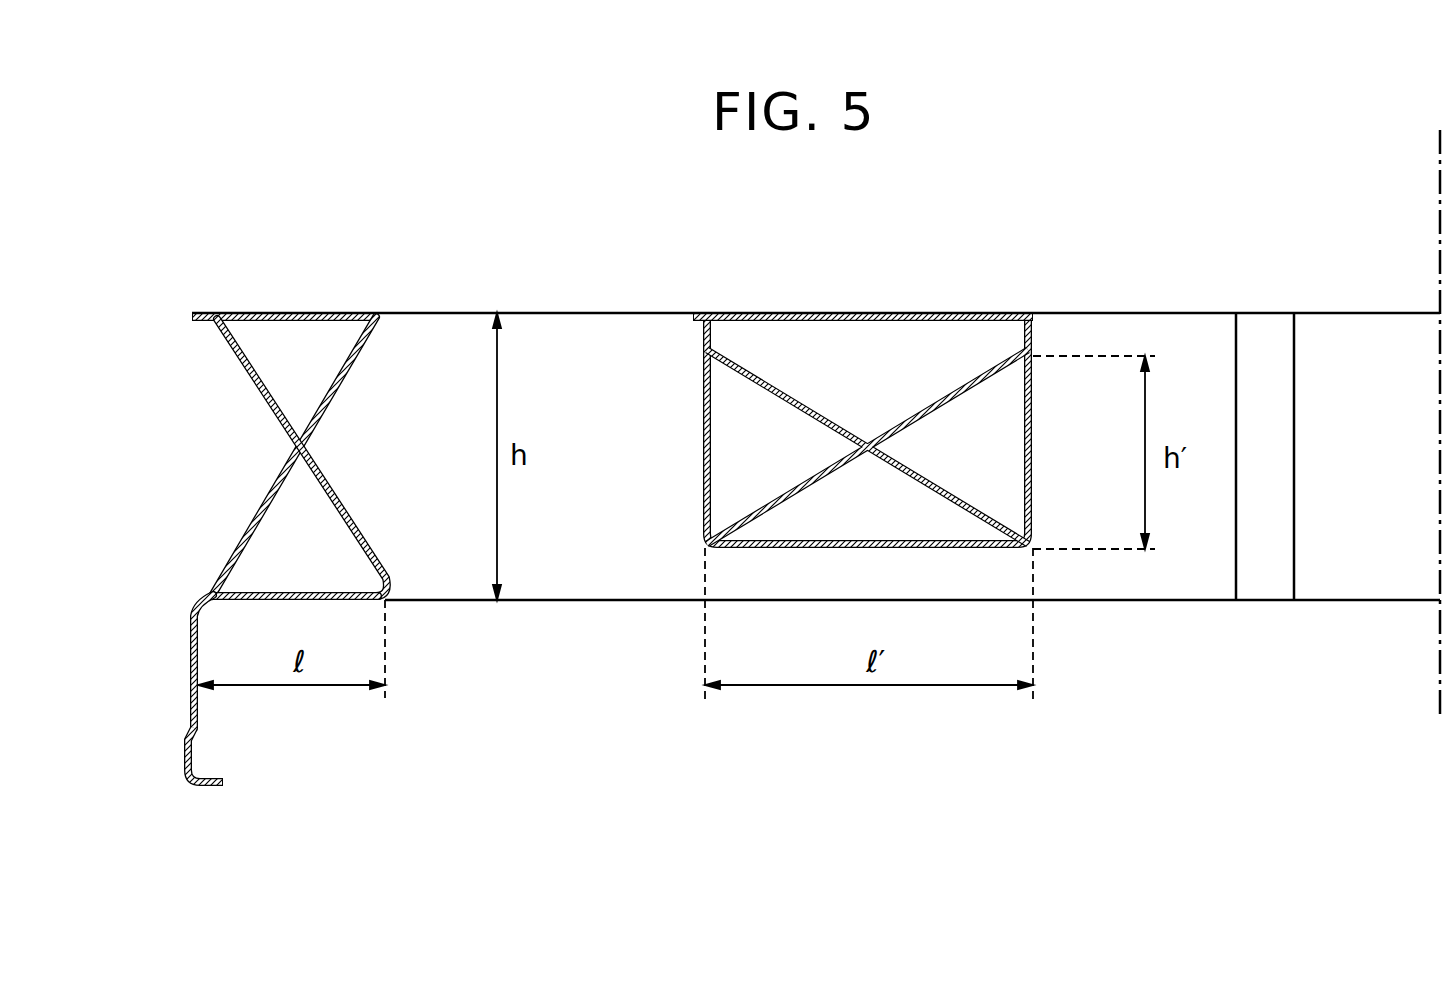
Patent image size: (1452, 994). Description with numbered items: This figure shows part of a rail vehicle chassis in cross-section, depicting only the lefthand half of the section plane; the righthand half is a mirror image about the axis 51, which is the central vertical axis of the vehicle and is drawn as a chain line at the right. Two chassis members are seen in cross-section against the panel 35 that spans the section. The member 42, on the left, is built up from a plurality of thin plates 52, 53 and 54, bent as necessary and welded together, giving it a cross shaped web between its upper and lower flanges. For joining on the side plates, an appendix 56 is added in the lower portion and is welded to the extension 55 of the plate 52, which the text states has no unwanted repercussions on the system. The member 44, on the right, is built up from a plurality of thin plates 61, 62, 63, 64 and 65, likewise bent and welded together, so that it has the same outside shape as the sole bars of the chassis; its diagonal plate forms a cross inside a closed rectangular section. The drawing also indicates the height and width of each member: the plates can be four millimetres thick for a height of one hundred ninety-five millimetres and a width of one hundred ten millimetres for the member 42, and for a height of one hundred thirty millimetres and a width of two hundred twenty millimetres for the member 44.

The door panel 35 is at (1197, 335).
The member 42 is at (293, 495).
The member 44 is at (878, 393).
The axis 51 is at (1440, 562).
The plate 52 is at (284, 313).
The plate 53 is at (222, 340).
The plate 54 is at (385, 556).
The extension 55 is at (190, 662).
The appendix 56 is at (188, 778).
The plate 61 is at (803, 412).
The plate 62 is at (703, 455).
The plate 63 is at (1035, 458).
The plate 64 is at (918, 548).
The plate 65 is at (797, 313).